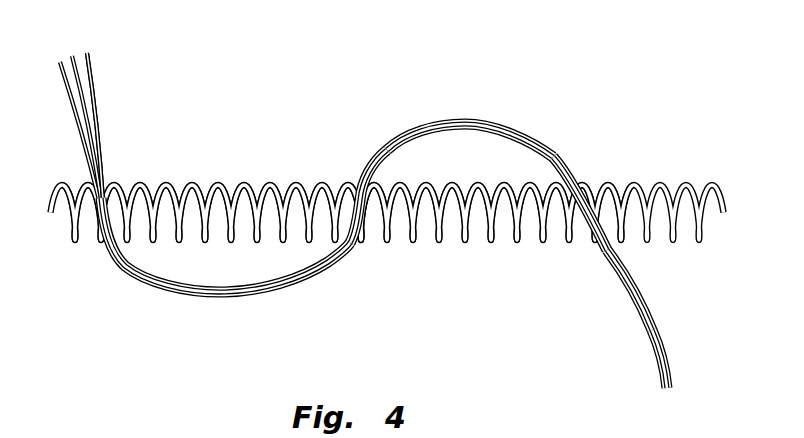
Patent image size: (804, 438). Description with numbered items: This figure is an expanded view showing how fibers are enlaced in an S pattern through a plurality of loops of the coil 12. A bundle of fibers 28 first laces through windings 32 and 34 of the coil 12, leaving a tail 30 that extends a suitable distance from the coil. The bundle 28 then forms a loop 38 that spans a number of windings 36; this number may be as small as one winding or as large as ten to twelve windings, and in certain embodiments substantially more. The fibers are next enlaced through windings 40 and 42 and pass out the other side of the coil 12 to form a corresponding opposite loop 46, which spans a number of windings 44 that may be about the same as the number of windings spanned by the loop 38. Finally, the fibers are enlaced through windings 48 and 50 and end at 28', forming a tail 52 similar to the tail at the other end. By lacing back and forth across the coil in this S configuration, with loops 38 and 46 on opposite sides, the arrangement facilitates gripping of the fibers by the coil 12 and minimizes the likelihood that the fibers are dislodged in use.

The coil 12 is at (673, 168).
The bundle of fibers 28 is at (670, 376).
The end of the fiber bundle 28' is at (76, 111).
The tail 30 is at (653, 312).
The winding 32 is at (608, 180).
The winding 34 is at (573, 187).
The windings 36 is at (597, 250).
The loop 38 is at (508, 113).
The winding 40 is at (370, 181).
The winding 42 is at (356, 172).
The windings 44 is at (354, 176).
The opposite loop 46 is at (217, 304).
The winding 48 is at (107, 242).
The winding 50 is at (83, 190).
The tail 52 is at (95, 98).